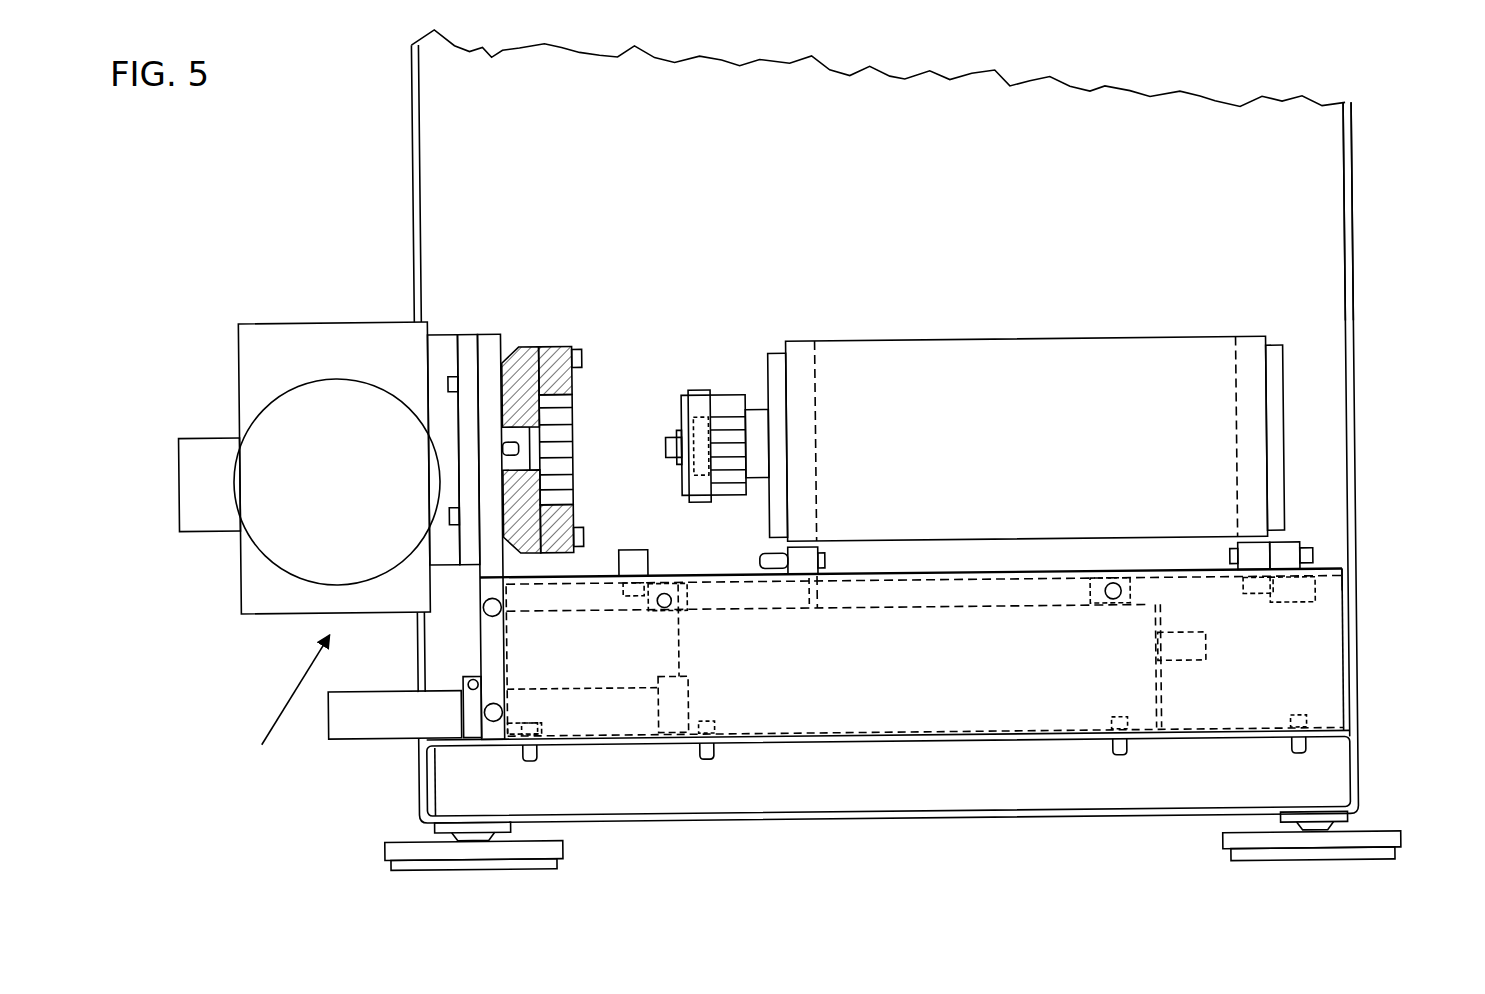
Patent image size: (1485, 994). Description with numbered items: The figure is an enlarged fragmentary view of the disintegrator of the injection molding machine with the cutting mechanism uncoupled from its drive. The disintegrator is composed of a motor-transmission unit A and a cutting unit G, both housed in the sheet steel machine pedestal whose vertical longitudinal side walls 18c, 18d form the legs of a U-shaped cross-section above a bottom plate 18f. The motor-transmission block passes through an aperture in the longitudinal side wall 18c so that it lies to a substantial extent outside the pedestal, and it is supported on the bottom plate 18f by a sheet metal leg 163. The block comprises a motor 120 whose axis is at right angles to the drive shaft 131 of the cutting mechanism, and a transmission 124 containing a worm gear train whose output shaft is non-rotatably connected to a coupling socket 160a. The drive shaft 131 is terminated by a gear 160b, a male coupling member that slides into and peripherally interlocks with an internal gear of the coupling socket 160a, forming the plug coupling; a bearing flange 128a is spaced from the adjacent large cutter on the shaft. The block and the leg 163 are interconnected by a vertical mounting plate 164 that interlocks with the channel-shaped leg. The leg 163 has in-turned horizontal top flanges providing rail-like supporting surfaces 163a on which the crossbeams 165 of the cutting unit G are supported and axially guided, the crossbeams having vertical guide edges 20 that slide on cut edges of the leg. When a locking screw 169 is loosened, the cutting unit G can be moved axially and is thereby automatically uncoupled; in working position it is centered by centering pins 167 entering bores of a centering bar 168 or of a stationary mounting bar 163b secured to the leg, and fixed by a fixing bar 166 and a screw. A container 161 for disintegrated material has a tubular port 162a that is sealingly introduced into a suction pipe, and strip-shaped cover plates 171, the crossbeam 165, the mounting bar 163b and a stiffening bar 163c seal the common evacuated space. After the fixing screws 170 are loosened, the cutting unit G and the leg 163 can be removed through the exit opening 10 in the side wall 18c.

The exit opening 10 is at (1360, 352).
The longitudinal side wall 18c is at (417, 207).
The longitudinal side wall 18d is at (1362, 307).
The bottom plate 18f is at (746, 745).
The vertical guide edge 20 is at (809, 582).
The motor 120 is at (319, 559).
The transmission 124 is at (281, 560).
The bearing flange 128a is at (800, 348).
The drive shaft 131 is at (760, 440).
The coupling socket 160a is at (579, 385).
The gear 160b is at (715, 388).
The container 161 is at (920, 690).
The tubular port 162a is at (587, 721).
The leg 163 is at (1358, 585).
The supporting surface 163a is at (722, 579).
The mounting bar 163b is at (1107, 612).
The stiffening bar 163c is at (675, 620).
The mounting plate 164 is at (490, 346).
The crossbeam 165 is at (808, 561).
The fixing bar 166 is at (1298, 547).
The centering pin 167 is at (782, 571).
The centering bar 168 is at (635, 552).
The locking screw 169 is at (1274, 614).
The fixing screw 170 is at (1309, 725).
The cover plate 171 is at (884, 600).
The cutting unit G is at (1090, 344).
The motor-transmission unit A is at (286, 703).